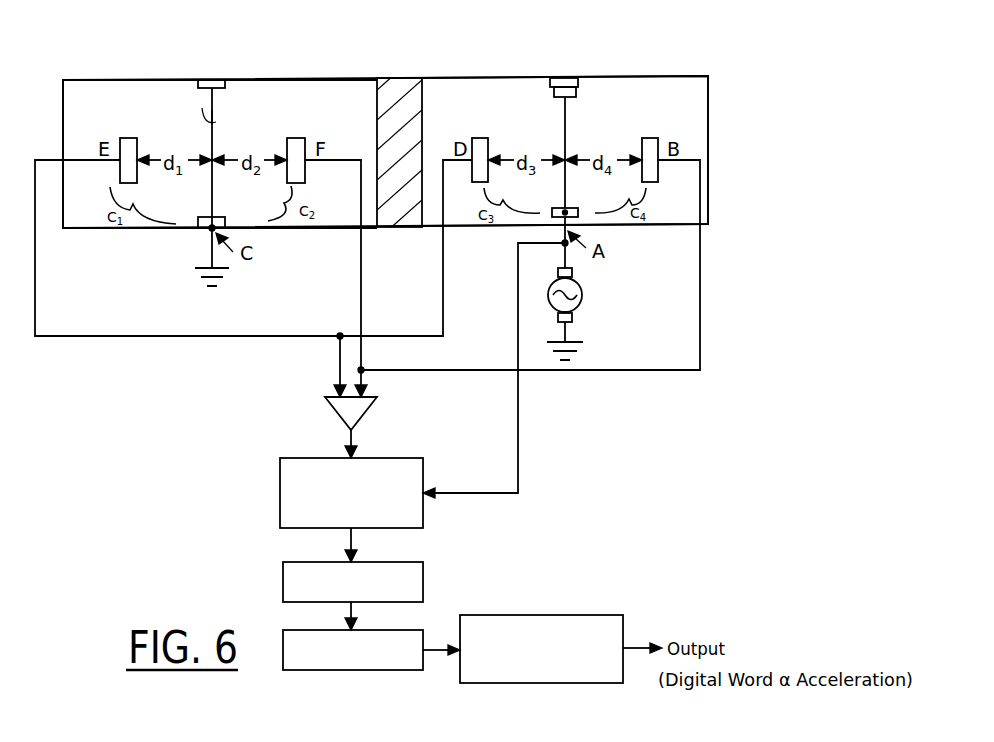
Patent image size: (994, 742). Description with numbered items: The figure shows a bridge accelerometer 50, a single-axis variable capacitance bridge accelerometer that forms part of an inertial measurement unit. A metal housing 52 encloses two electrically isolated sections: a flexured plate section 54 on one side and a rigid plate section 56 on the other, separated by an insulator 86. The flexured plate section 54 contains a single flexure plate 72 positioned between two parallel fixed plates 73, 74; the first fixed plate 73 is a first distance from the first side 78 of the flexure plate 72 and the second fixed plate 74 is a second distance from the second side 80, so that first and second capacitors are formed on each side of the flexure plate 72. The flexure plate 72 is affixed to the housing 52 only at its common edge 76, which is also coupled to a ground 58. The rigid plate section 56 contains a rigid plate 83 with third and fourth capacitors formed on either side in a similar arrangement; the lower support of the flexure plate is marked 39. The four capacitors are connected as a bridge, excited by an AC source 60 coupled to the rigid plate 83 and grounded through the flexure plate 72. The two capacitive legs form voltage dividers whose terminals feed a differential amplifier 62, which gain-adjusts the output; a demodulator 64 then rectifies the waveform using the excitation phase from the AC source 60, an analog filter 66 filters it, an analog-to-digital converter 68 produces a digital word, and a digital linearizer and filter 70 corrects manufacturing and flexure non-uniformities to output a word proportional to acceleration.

The bridge accelerometer 50 is at (762, 146).
The housing 52 is at (314, 78).
The flexured plate section 54 is at (117, 78).
The rigid plate section 56 is at (478, 78).
The ground 58 is at (211, 263).
The AC source 60 is at (583, 296).
The differential amplifier 62 is at (367, 412).
The demodulator 64 is at (428, 472).
The analog filter 66 is at (423, 556).
The analog-to-digital converter 68 is at (423, 628).
The digital linearizer and filter 70 is at (583, 612).
The flexure plate 72 is at (189, 194).
The first fixed plate 73 is at (127, 138).
The second fixed plate 74 is at (300, 138).
The common edge 76 is at (208, 78).
The first side 78 is at (185, 124).
The second side 80 is at (226, 123).
The rigid plate 83 is at (565, 113).
The insulator 86 is at (395, 78).
The lower support of center electrode 39 is at (220, 217).